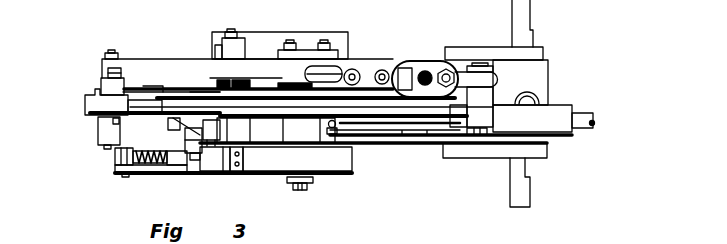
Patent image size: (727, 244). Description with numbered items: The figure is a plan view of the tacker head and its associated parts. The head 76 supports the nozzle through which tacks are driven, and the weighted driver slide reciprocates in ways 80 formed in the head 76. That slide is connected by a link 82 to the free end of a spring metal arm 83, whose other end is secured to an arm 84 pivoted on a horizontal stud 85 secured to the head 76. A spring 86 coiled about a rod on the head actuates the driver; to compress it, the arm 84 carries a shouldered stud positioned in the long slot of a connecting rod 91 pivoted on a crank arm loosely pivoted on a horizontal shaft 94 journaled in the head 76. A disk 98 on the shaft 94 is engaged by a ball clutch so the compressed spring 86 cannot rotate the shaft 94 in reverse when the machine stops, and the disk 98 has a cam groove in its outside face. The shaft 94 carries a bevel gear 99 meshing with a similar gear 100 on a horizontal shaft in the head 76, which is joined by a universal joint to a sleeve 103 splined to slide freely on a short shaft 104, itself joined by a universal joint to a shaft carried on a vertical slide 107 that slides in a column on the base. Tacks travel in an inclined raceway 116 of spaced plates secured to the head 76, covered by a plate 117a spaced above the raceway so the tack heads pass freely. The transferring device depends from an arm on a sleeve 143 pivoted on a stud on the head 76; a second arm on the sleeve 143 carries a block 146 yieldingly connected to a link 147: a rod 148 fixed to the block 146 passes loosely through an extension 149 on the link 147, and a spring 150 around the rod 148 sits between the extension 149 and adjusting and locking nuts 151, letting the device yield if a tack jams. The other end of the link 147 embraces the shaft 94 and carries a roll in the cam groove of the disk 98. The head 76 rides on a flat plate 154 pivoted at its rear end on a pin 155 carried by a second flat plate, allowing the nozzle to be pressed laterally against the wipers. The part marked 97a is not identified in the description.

The head 76 is at (95, 99).
The ways 80 is at (128, 102).
The link 82 is at (103, 77).
The spring metal arm 83 is at (137, 65).
The arm 84 is at (383, 69).
The horizontal stud 85 is at (472, 65).
The spring 86 is at (428, 70).
The connecting rod 91 is at (308, 55).
The horizontal shaft 94 is at (305, 185).
The plate 97a is at (243, 163).
The disk 98 is at (352, 160).
The bevel gear 99 is at (288, 83).
The gear 100 is at (334, 128).
The sleeve 103 is at (543, 122).
The short shaft 104 is at (590, 128).
The vertical slide 107 is at (533, 41).
The inclined raceway 116 is at (335, 82).
The plate 117a is at (192, 100).
The sleeve 143 is at (100, 133).
The block 146 is at (115, 157).
The link 147 is at (277, 170).
The rod 148 is at (120, 147).
The extension 149 is at (133, 172).
The spring 150 is at (157, 164).
The adjusting and locking nuts 151 is at (172, 165).
The flat plate 154 is at (528, 78).
The pin 155 is at (543, 97).